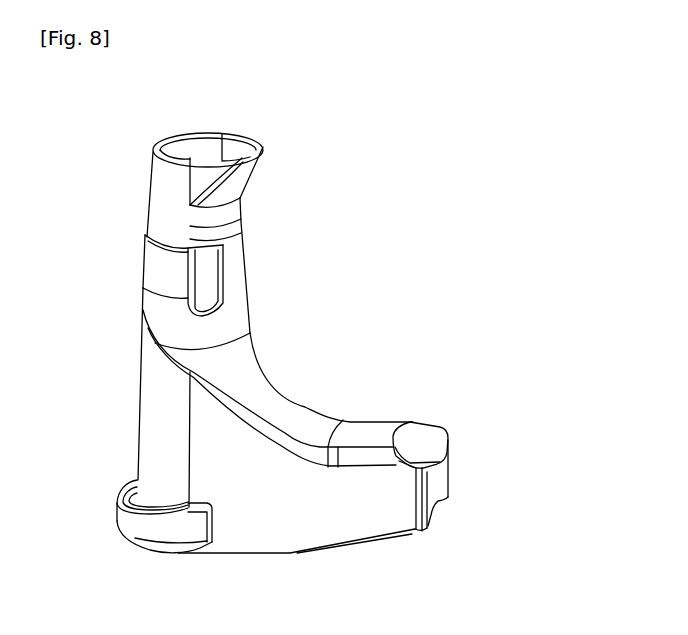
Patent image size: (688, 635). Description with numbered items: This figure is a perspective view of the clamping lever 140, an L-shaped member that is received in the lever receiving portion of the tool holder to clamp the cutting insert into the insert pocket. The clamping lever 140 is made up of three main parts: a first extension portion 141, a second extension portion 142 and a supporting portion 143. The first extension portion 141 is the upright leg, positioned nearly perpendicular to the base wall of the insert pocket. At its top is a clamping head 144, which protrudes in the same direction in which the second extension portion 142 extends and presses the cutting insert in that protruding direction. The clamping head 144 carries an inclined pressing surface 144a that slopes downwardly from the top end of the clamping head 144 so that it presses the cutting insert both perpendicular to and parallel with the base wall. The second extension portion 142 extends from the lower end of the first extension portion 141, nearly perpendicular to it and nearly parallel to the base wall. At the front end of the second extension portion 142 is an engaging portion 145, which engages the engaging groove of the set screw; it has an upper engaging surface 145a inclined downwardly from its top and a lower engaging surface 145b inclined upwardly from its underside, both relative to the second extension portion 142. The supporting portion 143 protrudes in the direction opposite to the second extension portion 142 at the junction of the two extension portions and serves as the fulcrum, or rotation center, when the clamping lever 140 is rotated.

The clamping lever 140 is at (406, 146).
The first extension portion 141 is at (240, 280).
The second extension portion 142 is at (307, 473).
The supporting portion 143 is at (130, 518).
The clamping head 144 is at (262, 141).
The inclined pressing surface 144a is at (247, 178).
The engaging portion 145 is at (440, 478).
The upper engaging surface 145a is at (427, 436).
The lower engaging surface 145b is at (435, 515).